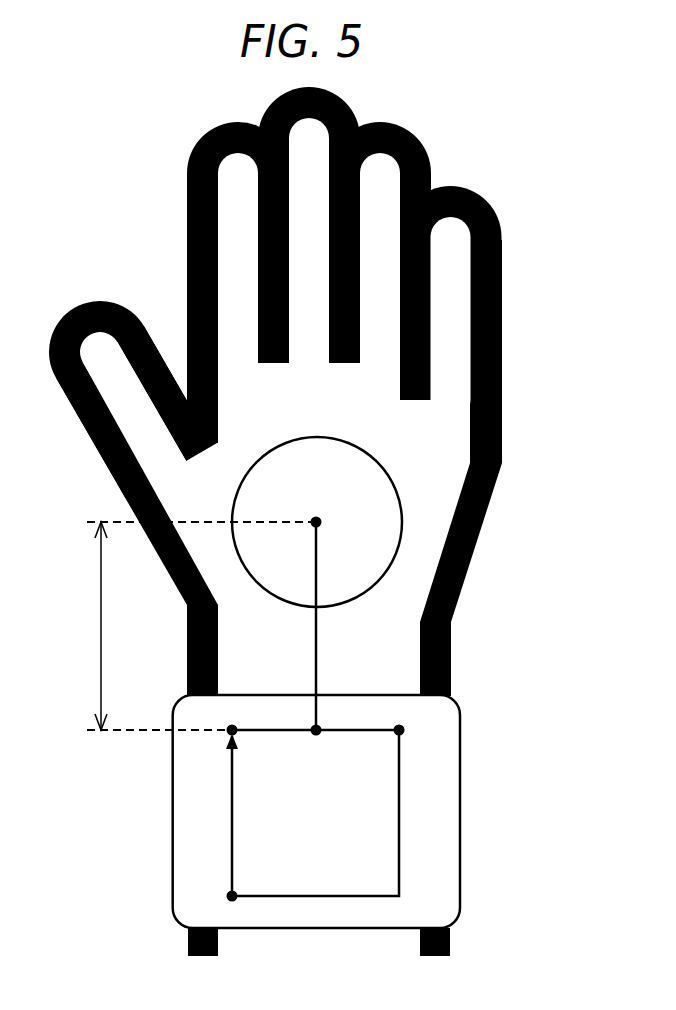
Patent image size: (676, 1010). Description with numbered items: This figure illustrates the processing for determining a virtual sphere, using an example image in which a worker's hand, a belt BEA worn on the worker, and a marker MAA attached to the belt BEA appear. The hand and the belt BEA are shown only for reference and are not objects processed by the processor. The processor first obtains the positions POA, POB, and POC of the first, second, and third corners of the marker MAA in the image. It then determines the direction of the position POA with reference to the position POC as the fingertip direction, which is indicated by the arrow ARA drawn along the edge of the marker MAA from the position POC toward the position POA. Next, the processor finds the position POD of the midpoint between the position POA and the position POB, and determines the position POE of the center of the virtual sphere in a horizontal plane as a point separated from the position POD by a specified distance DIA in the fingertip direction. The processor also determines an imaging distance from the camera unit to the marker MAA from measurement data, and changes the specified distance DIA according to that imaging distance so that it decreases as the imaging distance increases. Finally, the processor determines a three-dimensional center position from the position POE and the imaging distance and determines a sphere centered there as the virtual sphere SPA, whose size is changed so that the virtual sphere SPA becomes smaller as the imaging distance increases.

The virtual sphere SPA is at (380, 462).
The position of the center of the virtual sphere POE is at (318, 518).
The specified distance DIA is at (186, 626).
The position of the first corner POA is at (234, 728).
The position of the second corner POB is at (396, 727).
The position of the third corner POC is at (235, 894).
The position of the midpoint POD is at (318, 734).
The arrow ARA is at (238, 744).
The belt BEA is at (462, 760).
The marker MAA is at (390, 817).